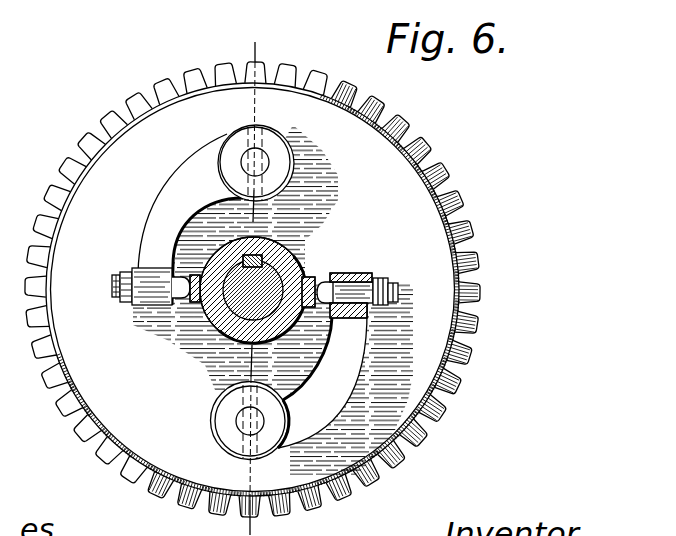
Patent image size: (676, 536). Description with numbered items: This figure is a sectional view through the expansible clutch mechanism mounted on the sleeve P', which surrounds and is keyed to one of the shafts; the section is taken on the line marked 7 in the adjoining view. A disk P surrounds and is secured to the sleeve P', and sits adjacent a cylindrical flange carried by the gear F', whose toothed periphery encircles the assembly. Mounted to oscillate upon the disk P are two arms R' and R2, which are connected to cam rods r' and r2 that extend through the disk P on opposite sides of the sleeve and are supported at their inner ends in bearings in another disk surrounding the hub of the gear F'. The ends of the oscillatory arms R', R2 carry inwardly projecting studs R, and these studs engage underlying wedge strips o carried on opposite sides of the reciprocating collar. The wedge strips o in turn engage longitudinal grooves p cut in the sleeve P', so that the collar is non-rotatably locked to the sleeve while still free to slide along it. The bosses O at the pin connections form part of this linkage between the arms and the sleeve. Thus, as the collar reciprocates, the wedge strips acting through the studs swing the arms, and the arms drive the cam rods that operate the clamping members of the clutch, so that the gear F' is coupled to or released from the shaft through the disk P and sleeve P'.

The disk P is at (253, 290).
The gear F' is at (407, 222).
The oscillatory arm R' is at (167, 219).
The oscillatory arm R2 is at (330, 403).
The cam rod r' is at (229, 155).
The cam rod r2 is at (243, 422).
The sleeve P' is at (270, 274).
The longitudinal groove p is at (230, 343).
The inwardly projecting stud R is at (251, 293).
The left boss O is at (198, 306).
The wedge strip o is at (333, 318).
The section line 7- 7 is at (262, 528).